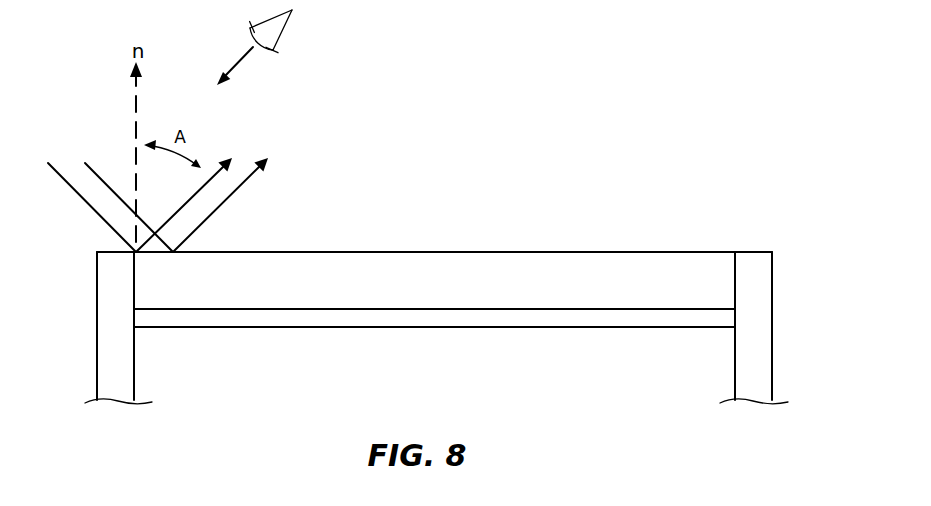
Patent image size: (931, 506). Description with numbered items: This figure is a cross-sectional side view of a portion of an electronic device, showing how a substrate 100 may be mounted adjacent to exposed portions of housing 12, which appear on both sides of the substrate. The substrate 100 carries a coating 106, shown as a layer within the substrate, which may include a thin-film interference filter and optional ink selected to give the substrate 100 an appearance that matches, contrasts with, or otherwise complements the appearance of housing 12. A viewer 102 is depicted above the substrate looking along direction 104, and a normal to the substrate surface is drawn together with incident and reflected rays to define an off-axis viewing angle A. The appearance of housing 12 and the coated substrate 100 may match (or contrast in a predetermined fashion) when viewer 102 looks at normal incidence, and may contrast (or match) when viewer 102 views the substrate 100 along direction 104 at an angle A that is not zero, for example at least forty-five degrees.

The housing 12 is at (101, 323).
The substrate 100 is at (567, 263).
The viewer 102 is at (280, 33).
The direction 104 is at (233, 65).
The coating 106 is at (562, 323).